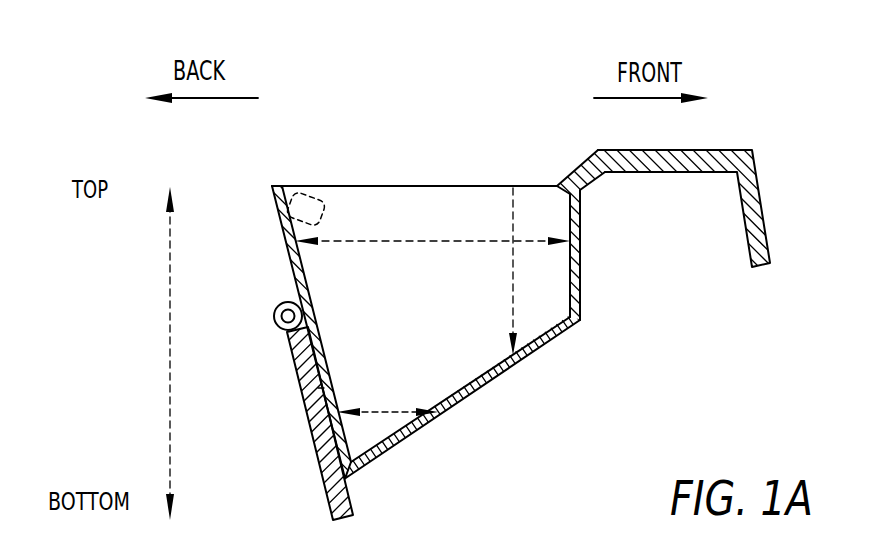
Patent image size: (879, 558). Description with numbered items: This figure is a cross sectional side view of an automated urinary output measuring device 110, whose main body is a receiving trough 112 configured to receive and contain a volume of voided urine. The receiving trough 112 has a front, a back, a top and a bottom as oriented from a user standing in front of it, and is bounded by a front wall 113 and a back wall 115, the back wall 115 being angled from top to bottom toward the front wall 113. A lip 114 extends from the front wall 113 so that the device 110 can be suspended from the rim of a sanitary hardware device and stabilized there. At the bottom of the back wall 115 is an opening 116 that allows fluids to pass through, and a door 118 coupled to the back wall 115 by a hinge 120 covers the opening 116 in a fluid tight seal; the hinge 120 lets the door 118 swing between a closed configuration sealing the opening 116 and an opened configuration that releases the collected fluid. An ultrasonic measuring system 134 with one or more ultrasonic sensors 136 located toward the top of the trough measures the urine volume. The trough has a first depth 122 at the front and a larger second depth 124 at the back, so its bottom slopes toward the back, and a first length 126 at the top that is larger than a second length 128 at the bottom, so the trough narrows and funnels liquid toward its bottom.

The automated urinary output measuring device 110 is at (458, 78).
The receiving trough 112 is at (367, 186).
The front wall 113 is at (571, 217).
The lip 114 is at (690, 150).
The back wall 115 is at (290, 259).
The opening 116 is at (360, 457).
The door 118 is at (320, 444).
The hinge 120 is at (275, 310).
The first depth 122 is at (513, 290).
The second depth 124 is at (170, 302).
The first length 126 is at (388, 242).
The second length 128 is at (390, 413).
The ultrasonic measuring system 134 is at (248, 174).
The ultrasonic sensors 136 is at (304, 205).